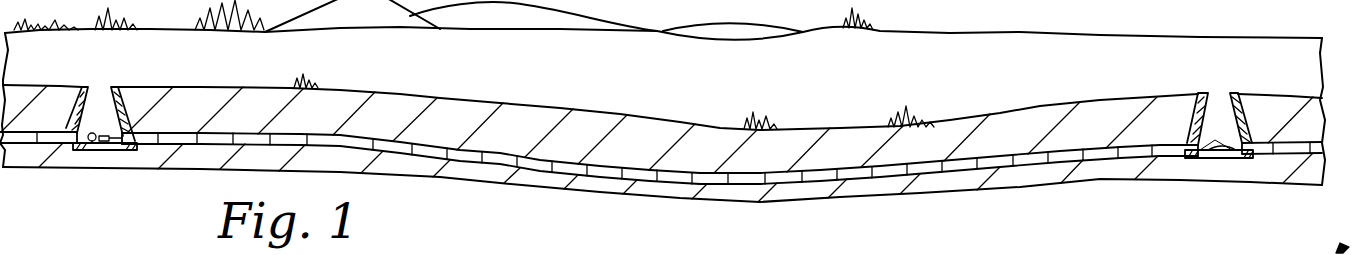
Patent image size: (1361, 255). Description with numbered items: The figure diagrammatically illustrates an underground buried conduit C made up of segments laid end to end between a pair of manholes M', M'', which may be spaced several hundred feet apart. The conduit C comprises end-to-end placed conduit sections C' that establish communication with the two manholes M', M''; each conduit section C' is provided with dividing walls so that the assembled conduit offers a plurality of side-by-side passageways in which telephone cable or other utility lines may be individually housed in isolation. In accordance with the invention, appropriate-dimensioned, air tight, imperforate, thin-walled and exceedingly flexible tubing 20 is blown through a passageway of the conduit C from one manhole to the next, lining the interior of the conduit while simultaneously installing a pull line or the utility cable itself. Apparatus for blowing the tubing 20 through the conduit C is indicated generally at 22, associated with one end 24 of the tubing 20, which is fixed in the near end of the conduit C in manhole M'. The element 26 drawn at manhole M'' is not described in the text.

The manhole M' is at (112, 104).
The manhole M'' is at (1229, 109).
The conduit C is at (661, 174).
The conduit section C' is at (500, 184).
The tubing 20 is at (113, 134).
The apparatus for blowing tubing 22 is at (95, 147).
The end of the tubing 24 is at (112, 152).
The pull line receiver 26 is at (1228, 144).